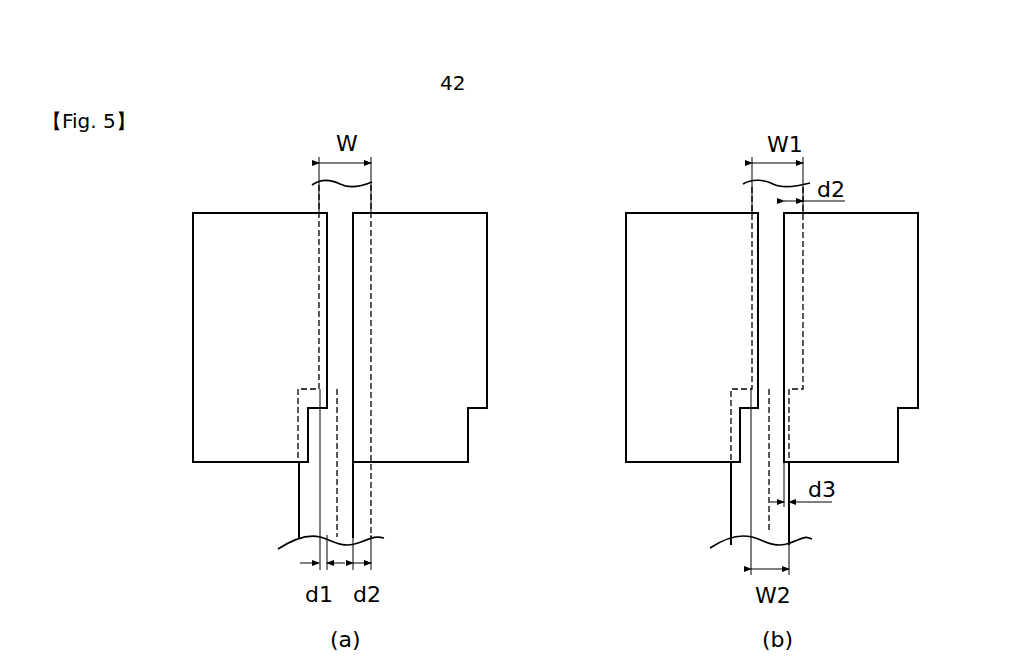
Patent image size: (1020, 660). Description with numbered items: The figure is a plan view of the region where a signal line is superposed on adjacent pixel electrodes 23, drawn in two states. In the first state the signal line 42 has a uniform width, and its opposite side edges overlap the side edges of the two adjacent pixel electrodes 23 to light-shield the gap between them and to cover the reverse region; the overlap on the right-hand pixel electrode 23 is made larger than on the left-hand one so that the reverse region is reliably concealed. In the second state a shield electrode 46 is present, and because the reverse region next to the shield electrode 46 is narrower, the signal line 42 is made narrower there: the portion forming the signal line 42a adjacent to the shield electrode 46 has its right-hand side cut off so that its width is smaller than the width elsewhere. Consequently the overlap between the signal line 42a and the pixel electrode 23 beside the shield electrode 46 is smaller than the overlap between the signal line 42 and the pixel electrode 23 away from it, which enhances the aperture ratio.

The pixel electrode 23 is at (222, 227).
The signal line 42 is at (360, 202).
The signal line adjacent to the shield electrode 42a is at (757, 510).
The shield electrode 46 is at (299, 493).